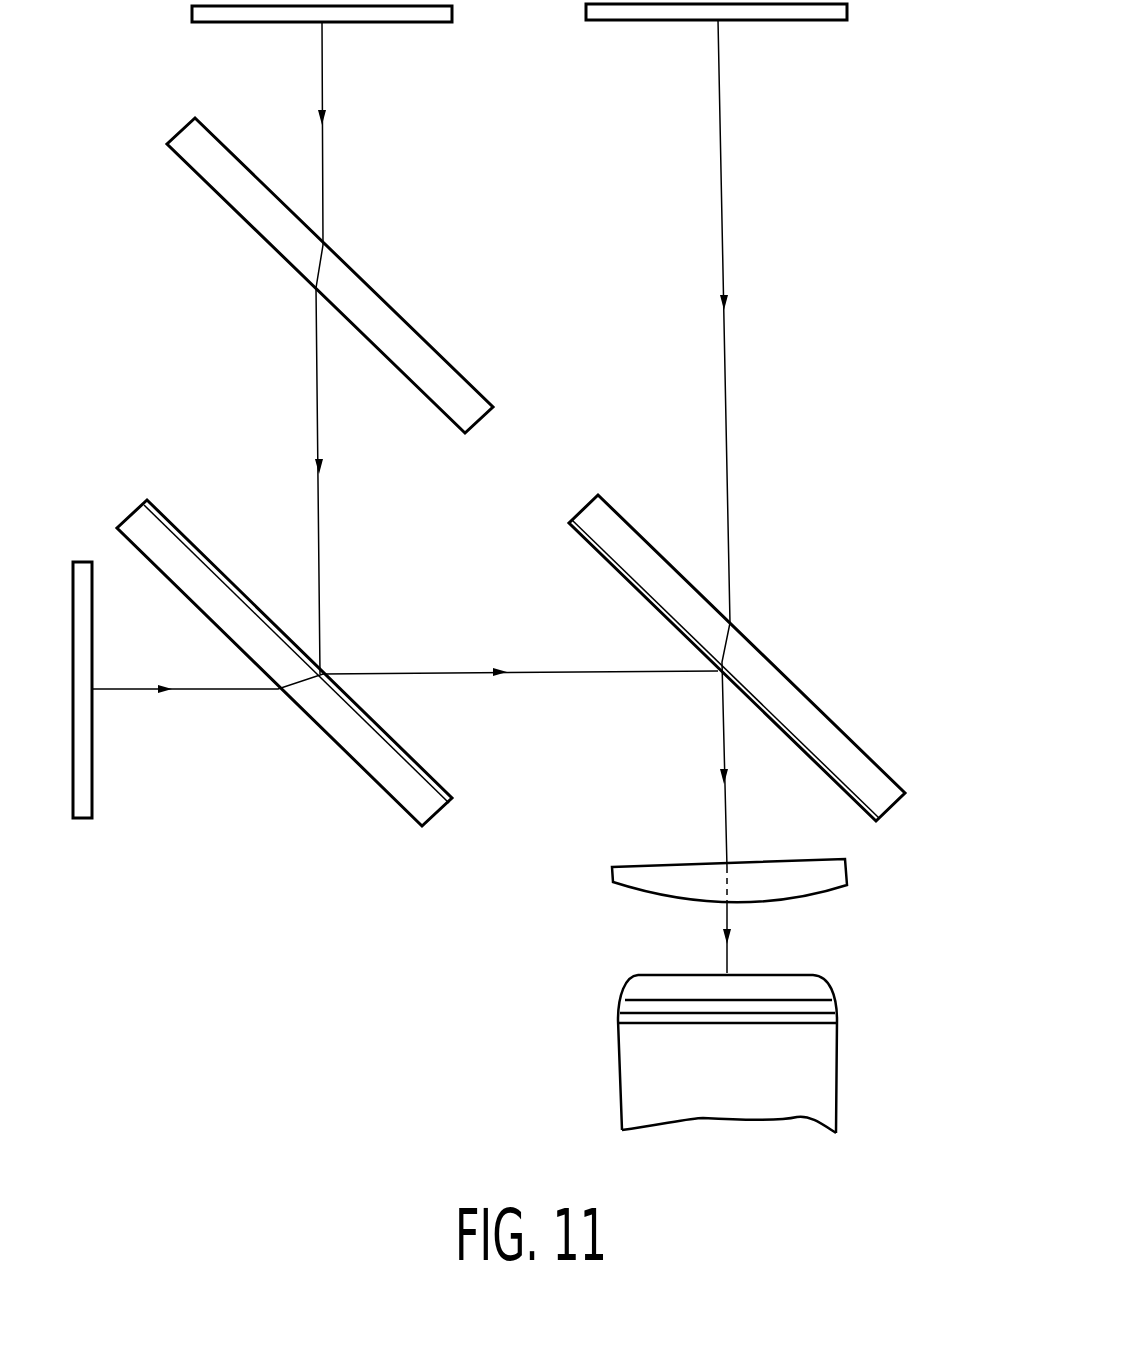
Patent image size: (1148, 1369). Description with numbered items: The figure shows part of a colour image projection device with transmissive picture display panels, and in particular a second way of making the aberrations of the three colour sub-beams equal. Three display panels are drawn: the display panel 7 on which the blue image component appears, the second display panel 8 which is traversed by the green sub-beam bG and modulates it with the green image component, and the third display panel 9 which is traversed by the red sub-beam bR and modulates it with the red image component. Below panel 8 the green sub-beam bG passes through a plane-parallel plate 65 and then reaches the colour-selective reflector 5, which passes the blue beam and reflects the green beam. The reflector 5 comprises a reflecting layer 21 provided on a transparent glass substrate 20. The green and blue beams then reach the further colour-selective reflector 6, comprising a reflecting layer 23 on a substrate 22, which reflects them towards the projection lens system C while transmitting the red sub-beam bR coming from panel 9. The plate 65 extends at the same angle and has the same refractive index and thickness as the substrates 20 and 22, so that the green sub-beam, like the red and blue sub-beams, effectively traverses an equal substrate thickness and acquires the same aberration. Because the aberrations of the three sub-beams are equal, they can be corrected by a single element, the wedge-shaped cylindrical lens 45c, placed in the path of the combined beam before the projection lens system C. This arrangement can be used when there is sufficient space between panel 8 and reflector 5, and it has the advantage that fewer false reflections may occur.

The second display panel 8 is at (452, 13).
The third display panel 9 is at (847, 12).
The display panel 7 is at (81, 817).
The plane-parallel plate 65 is at (478, 388).
The colour-selective reflector 5 is at (122, 494).
The substrate 20 is at (427, 807).
The reflecting layer 21 is at (448, 790).
The further colour-selective reflector 6 is at (573, 494).
The substrate 22 is at (885, 792).
The reflecting layer 23 is at (873, 819).
The wedge-shaped cylindrical lens 45c is at (848, 873).
The projection lens system C is at (848, 1056).
The green sub-beam bG is at (341, 348).
The red sub-beam bR is at (743, 443).